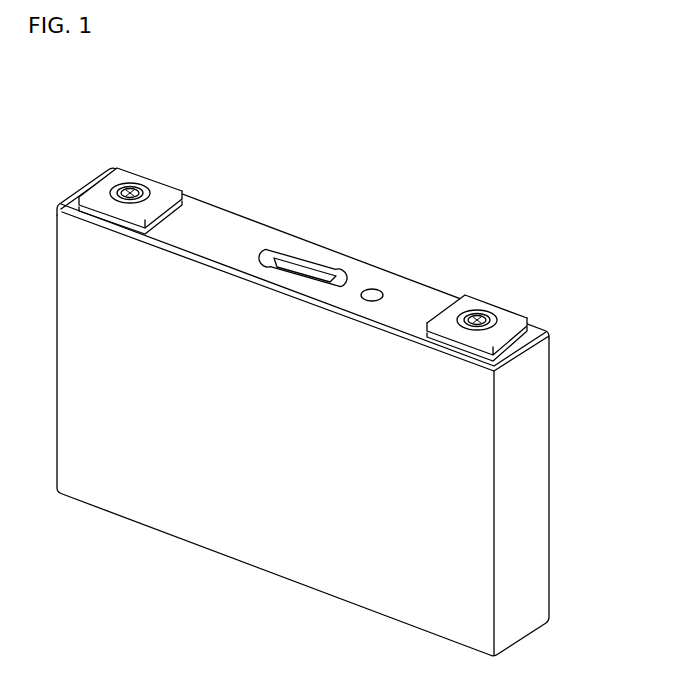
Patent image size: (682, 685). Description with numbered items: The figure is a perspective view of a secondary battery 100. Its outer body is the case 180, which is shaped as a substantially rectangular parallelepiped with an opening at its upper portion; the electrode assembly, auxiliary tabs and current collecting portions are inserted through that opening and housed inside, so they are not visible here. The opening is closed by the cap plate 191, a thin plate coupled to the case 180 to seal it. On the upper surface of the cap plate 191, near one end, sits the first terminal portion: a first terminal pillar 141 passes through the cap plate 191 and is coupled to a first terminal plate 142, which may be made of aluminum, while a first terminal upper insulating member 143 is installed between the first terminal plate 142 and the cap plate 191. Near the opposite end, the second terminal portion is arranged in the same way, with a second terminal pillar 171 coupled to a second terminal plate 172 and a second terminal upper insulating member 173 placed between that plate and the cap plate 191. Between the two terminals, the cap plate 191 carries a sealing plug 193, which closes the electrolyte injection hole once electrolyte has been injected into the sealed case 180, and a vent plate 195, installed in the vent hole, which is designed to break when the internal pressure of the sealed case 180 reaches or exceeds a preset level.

The secondary battery 100 is at (405, 168).
The first terminal pillar 141 is at (130, 188).
The first terminal plate 142 is at (159, 190).
The first terminal upper insulating member 143 is at (185, 206).
The second terminal pillar 171 is at (478, 316).
The second terminal plate 172 is at (453, 310).
The second terminal upper insulating member 173 is at (546, 332).
The case 180 is at (522, 513).
The cap plate 191 is at (252, 232).
The sealing plug 193 is at (374, 289).
The vent plate 195 is at (310, 258).